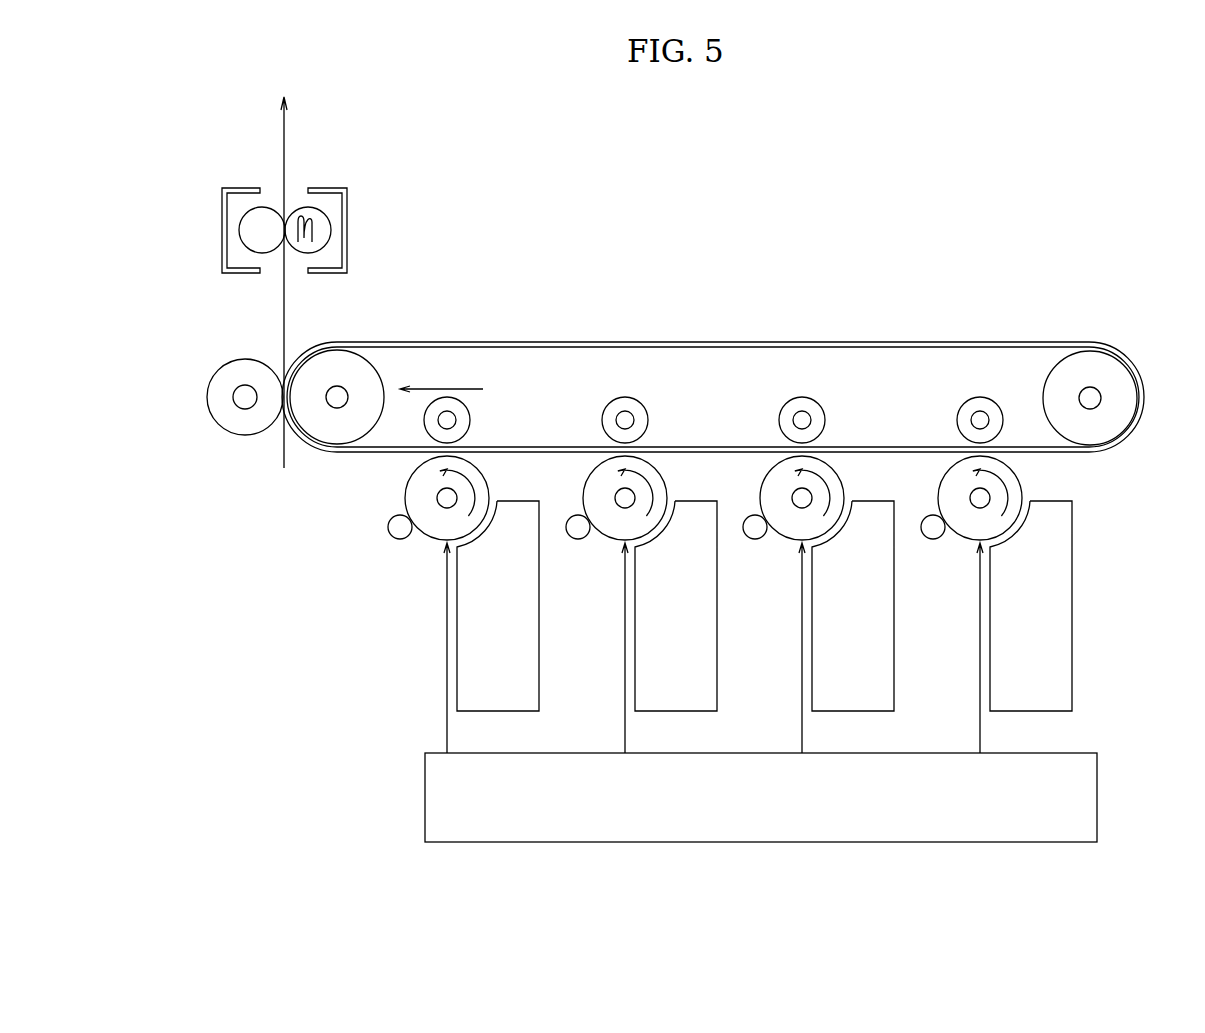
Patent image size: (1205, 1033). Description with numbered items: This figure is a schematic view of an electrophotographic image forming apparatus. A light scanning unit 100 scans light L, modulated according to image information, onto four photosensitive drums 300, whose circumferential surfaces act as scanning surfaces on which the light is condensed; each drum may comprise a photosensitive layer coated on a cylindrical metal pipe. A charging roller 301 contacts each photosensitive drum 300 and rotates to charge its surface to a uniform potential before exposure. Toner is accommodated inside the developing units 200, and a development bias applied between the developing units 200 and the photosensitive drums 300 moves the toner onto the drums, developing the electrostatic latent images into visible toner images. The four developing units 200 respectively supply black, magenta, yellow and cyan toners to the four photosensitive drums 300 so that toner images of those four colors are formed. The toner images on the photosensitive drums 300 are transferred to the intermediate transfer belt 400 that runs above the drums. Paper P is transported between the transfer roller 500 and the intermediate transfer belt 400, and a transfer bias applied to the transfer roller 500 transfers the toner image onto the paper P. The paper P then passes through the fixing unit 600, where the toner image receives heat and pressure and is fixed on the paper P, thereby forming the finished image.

The light scanning unit 100 is at (1097, 797).
The developing units 200 is at (1033, 712).
The photosensitive drums 300 is at (1022, 476).
The charging roller 301 is at (933, 540).
The intermediate transfer belt 400 is at (893, 341).
The transfer roller 500 is at (207, 396).
The fixing unit 600 is at (201, 245).
The paper P is at (281, 305).
The light L is at (446, 686).